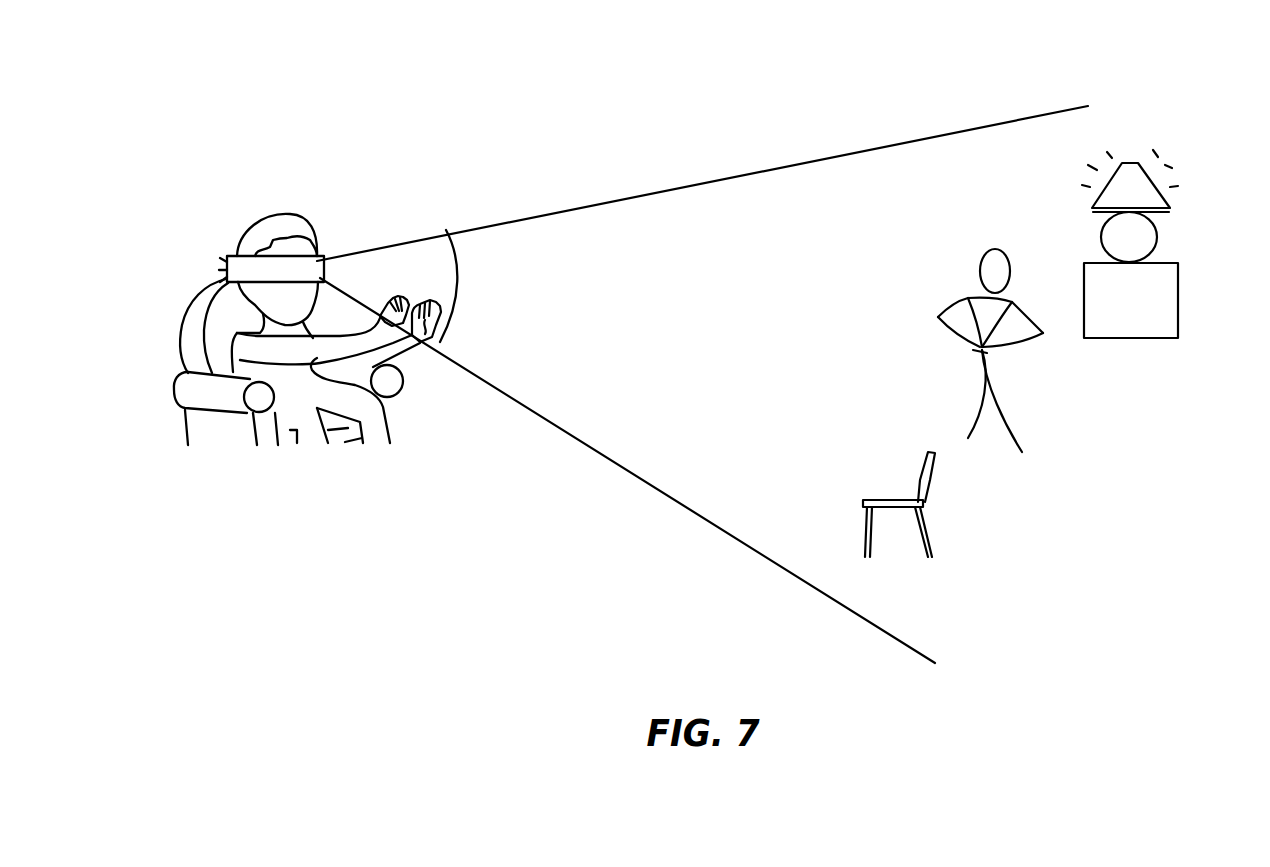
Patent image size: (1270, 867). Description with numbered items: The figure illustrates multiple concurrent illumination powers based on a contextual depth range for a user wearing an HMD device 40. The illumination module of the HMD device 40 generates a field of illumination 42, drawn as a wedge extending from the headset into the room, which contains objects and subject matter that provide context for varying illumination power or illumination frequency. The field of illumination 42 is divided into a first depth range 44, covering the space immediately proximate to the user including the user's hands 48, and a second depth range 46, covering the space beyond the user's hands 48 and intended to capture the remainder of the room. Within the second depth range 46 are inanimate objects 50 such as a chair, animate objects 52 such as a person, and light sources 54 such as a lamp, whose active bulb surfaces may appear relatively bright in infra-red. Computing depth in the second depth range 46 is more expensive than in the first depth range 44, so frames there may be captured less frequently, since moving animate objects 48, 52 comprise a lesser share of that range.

The HMD device 40 is at (227, 268).
The field of illumination 42 is at (530, 149).
The first depth range 44 is at (411, 255).
The second depth range 46 is at (629, 251).
The user's hands 48 is at (424, 347).
The inanimate objects 50 is at (889, 498).
The animate objects 52 is at (962, 298).
The light sources 54 is at (1134, 162).